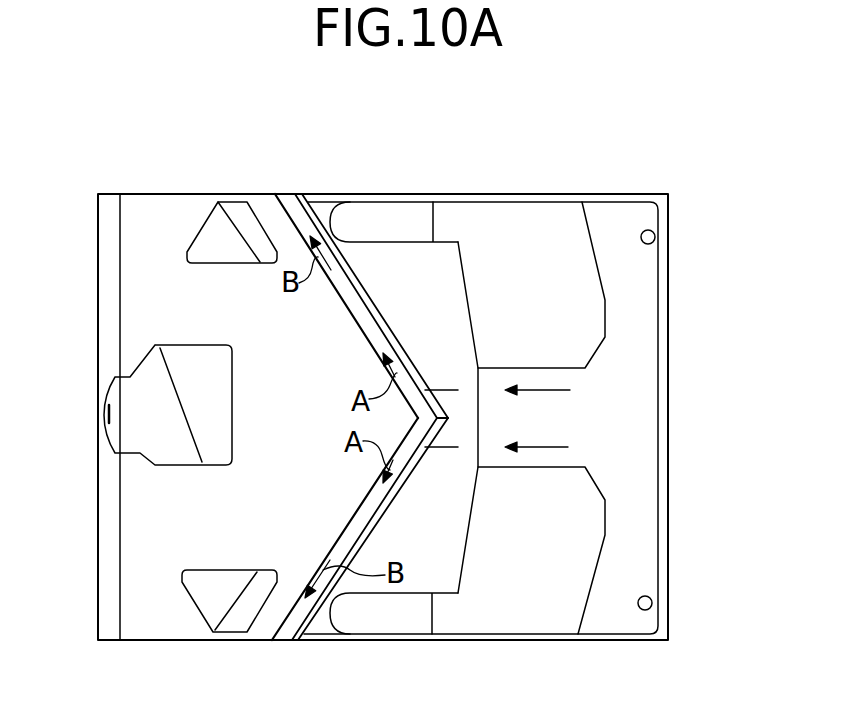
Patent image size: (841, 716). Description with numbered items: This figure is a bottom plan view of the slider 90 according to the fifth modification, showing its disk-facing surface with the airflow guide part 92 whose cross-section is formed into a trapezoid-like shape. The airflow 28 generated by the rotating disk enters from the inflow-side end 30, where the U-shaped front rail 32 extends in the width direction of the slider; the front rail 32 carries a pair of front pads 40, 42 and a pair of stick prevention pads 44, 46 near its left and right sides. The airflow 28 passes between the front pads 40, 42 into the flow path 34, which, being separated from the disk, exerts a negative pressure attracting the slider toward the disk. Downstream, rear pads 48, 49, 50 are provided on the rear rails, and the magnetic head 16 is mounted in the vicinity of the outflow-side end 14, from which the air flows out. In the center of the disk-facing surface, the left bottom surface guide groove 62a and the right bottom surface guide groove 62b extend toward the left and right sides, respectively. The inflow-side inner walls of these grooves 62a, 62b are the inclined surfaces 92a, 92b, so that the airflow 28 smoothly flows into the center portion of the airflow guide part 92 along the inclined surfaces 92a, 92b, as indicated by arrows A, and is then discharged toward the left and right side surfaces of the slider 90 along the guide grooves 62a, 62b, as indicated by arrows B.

The outflow-side end 14 is at (97, 558).
The magnetic head 16 is at (107, 415).
The airflow 28 is at (550, 388).
The inflow-side end 30 is at (668, 456).
The front rail 32 is at (652, 326).
The flow path 34 is at (383, 268).
The front pad 40 is at (547, 620).
The front pad 42 is at (548, 216).
The stick prevention pad 44 is at (653, 603).
The stick prevention pad 46 is at (655, 237).
The rear pad 48 is at (195, 613).
The rear pad 49 is at (160, 352).
The rear pad 50 is at (200, 225).
The left bottom surface guide groove 62a is at (356, 512).
The right bottom surface guide groove 62b is at (358, 325).
The slider 90 is at (473, 151).
The airflow guide part 92 is at (427, 378).
The inclined surface 92a is at (380, 518).
The inclined surface 92b is at (376, 305).